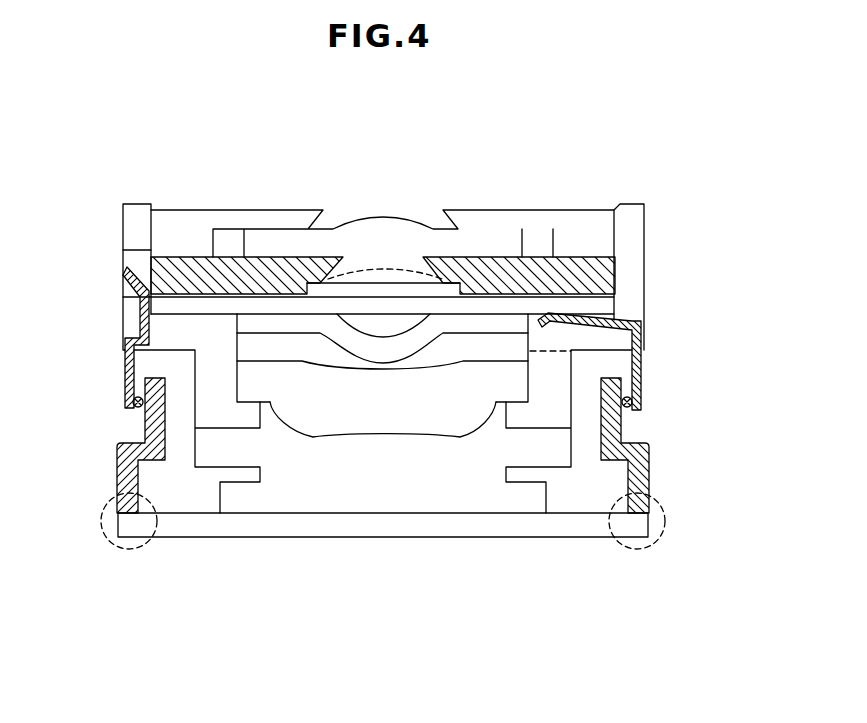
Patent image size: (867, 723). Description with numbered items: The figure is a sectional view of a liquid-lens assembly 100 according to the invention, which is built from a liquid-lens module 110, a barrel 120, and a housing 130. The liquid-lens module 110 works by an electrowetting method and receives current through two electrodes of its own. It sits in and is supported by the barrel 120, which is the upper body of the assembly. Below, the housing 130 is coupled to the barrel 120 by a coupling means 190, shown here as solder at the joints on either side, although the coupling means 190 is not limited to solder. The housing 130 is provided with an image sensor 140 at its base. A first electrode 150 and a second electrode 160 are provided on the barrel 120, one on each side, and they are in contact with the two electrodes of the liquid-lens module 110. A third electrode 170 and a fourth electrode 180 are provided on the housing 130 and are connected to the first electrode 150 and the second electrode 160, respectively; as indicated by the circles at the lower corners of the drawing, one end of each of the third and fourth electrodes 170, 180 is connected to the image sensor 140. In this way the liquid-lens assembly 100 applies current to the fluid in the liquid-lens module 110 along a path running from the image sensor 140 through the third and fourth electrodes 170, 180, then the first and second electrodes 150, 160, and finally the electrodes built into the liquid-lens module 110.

The liquid-lens assembly 100 is at (148, 110).
The liquid-lens module 110 is at (518, 308).
The barrel 120 is at (633, 276).
The housing 130 is at (577, 500).
The image sensor 140 is at (377, 527).
The first electrode 150 is at (142, 312).
The second electrode 160 is at (643, 364).
The third electrode 170 is at (128, 482).
The fourth electrode 180 is at (638, 485).
The coupling means 190 is at (133, 401).